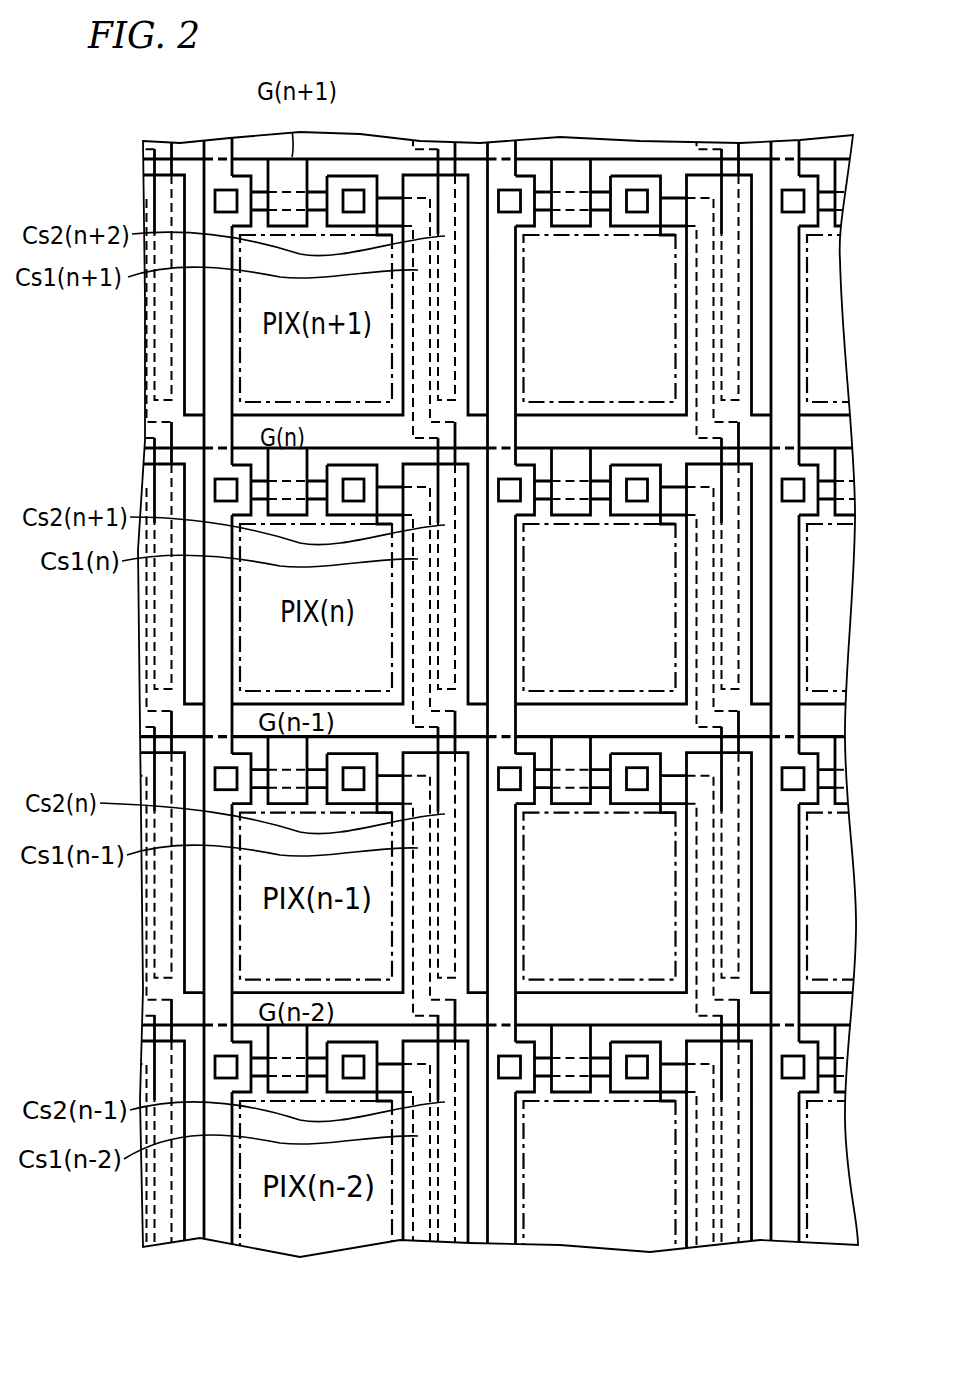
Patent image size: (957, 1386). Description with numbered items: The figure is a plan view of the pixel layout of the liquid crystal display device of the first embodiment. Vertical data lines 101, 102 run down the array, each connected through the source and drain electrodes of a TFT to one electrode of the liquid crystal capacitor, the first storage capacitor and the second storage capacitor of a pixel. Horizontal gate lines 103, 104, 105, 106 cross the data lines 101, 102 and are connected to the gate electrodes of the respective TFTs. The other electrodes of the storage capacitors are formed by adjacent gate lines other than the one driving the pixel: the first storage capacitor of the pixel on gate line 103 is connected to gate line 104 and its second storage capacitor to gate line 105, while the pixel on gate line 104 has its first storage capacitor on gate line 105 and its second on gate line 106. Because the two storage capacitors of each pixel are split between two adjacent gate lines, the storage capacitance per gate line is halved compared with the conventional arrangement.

The data line 101 is at (220, 150).
The data line 102 is at (497, 150).
The gate line 103 is at (152, 152).
The gate line 104 is at (152, 442).
The gate line 105 is at (150, 724).
The gate line 106 is at (150, 1016).